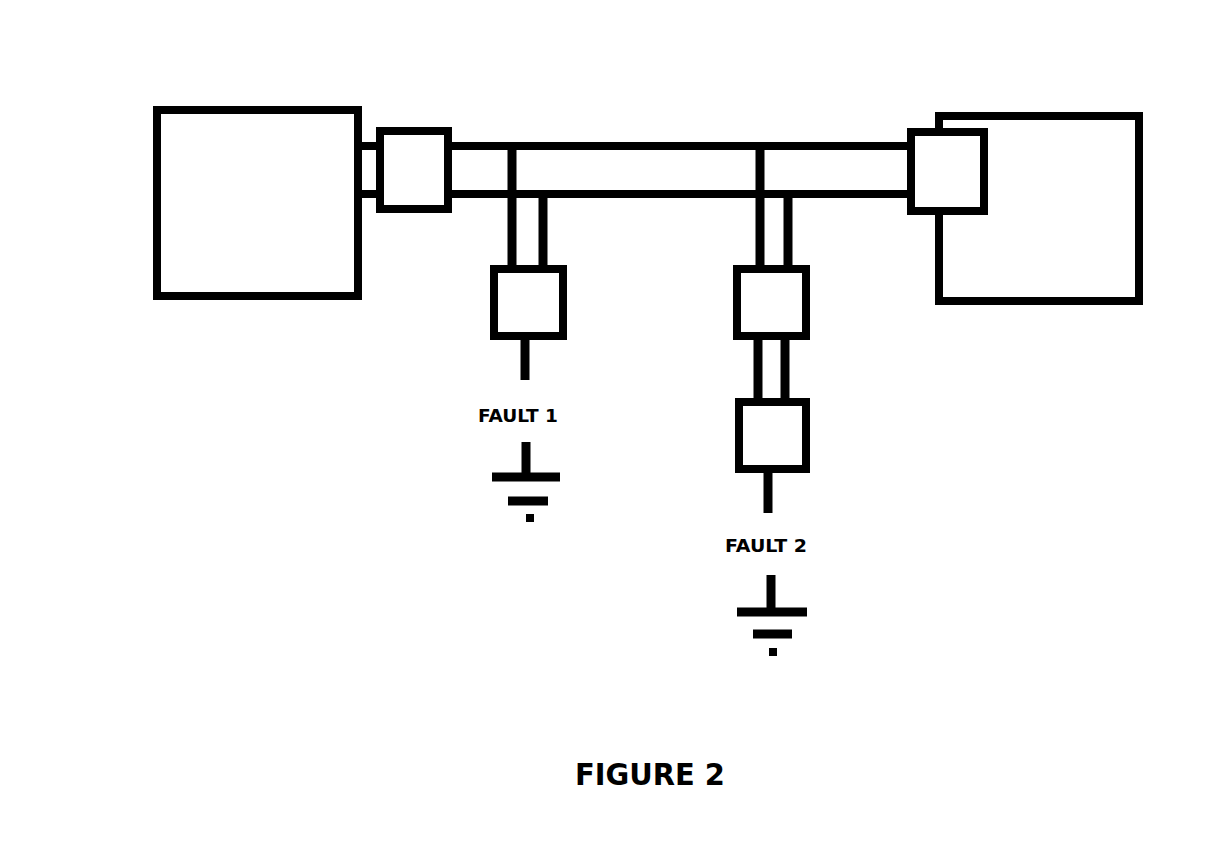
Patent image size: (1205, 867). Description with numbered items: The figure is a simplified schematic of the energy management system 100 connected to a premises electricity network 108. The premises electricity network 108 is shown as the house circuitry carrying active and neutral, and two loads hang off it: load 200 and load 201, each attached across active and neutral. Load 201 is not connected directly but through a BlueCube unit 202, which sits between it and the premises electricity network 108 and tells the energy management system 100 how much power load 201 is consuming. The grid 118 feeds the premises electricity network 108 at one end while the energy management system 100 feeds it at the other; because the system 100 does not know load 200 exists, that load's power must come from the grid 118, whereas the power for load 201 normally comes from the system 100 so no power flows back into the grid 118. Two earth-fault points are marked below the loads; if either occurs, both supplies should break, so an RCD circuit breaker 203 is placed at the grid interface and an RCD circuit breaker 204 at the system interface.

The energy management system 100 is at (1102, 278).
The premises electricity network 108 is at (668, 128).
The grid 118 is at (198, 270).
The load 200 is at (550, 305).
The load 201 is at (793, 450).
The BlueCube unit 202 is at (788, 295).
The RCD circuit breaker 203 is at (425, 187).
The RCD circuit breaker 204 is at (948, 187).